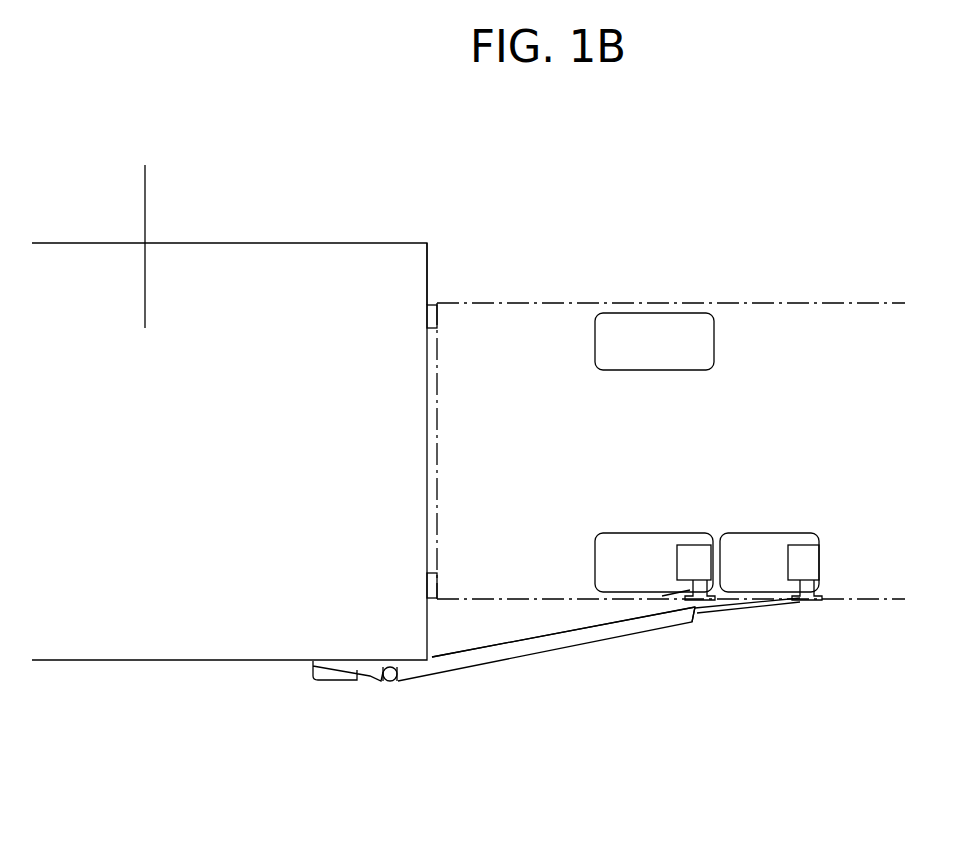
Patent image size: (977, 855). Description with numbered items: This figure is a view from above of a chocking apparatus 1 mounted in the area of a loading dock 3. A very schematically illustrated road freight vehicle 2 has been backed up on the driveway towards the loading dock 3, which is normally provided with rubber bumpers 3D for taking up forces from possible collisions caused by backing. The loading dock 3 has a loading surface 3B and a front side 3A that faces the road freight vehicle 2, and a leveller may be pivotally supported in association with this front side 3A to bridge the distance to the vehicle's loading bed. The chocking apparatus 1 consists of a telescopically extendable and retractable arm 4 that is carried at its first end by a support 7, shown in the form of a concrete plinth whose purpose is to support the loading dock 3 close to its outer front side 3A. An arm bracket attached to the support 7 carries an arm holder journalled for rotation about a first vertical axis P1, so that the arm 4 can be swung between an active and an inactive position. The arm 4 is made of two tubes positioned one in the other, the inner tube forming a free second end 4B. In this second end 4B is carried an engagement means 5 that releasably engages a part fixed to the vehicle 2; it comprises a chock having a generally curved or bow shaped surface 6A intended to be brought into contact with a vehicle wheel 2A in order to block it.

The chocking apparatus 1 is at (588, 661).
The road freight vehicle 2 is at (826, 302).
The vehicle wheel 2A is at (655, 345).
The loading dock 3 is at (313, 230).
The front side 3A is at (428, 275).
The loading surface 3B is at (146, 220).
The rubber bumpers 3D is at (438, 307).
The arm 4 is at (510, 661).
The free second end 4B is at (690, 620).
The engagement means 5 is at (824, 579).
The curved surface 6A is at (799, 580).
The support 7 is at (323, 690).
The first vertical axis P1 is at (390, 682).